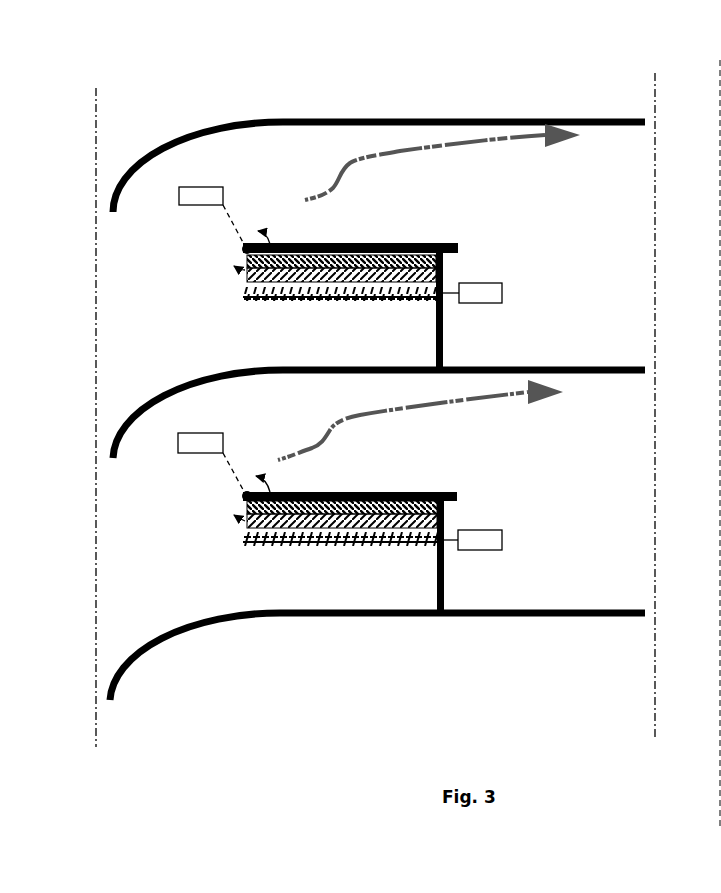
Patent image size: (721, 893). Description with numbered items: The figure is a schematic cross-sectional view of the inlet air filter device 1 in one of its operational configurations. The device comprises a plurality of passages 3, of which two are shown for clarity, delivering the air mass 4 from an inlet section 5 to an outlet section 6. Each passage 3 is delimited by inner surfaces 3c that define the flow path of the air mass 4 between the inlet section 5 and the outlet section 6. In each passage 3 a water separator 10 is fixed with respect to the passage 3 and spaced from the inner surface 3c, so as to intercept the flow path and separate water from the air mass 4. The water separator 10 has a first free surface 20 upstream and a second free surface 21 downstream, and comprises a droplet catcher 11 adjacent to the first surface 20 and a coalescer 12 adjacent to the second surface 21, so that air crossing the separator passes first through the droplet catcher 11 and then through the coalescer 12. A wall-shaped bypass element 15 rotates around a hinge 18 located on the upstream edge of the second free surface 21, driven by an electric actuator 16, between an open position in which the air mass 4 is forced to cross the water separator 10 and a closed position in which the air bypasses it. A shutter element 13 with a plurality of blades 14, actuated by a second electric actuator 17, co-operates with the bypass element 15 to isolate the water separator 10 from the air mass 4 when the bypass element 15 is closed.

The inlet air filter device 1 is at (203, 668).
The passage 3 is at (338, 118).
The inner surface 3c is at (475, 125).
The air mass 4 is at (552, 148).
The inlet section 5 is at (97, 88).
The outlet section 6 is at (653, 92).
The water separator 10 is at (447, 511).
The droplet catcher 11 is at (243, 521).
The coalescer 12 is at (437, 493).
The shutter element 13 is at (397, 542).
The blade 14 is at (308, 535).
The bypass element 15 is at (333, 245).
The electric actuator 16 is at (187, 205).
The second electric actuator 17 is at (503, 295).
The hinge 18 is at (250, 494).
The first free surface 20 is at (283, 542).
The second free surface 21 is at (322, 493).